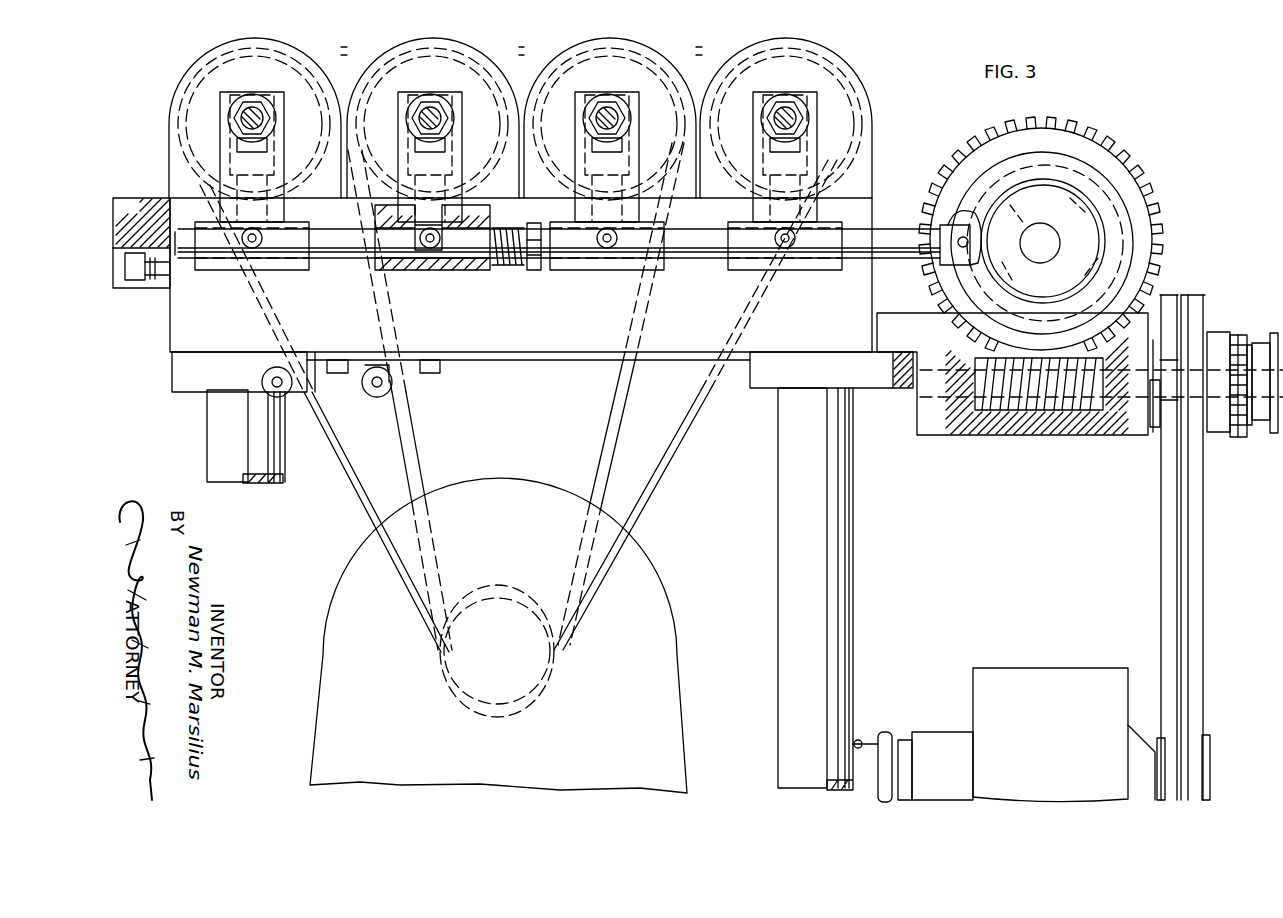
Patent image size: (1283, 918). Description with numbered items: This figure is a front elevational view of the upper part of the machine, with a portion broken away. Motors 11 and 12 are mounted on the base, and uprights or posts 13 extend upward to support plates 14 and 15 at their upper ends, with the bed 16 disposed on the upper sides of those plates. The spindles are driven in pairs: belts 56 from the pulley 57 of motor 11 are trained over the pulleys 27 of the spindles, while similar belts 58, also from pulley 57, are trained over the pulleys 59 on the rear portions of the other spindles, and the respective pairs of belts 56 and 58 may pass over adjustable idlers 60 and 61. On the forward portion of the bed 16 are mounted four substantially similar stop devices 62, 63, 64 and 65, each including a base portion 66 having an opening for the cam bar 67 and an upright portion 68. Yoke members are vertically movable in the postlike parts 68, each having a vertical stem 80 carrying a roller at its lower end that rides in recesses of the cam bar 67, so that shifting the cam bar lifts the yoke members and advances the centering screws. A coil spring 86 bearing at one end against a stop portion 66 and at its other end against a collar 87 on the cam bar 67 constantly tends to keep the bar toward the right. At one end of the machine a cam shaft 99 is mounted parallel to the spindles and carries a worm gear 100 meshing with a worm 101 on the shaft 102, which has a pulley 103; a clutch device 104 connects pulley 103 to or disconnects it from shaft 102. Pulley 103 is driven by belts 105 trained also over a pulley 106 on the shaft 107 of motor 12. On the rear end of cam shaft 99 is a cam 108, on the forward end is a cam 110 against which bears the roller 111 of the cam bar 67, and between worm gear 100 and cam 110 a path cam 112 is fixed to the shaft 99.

The motor 11 is at (633, 577).
The motor 12 is at (1016, 683).
The uprights or posts 13 is at (222, 420).
The plate 14 is at (190, 372).
The plate 15 is at (778, 378).
The bed 16 is at (182, 300).
The pulley 27 is at (217, 84).
The belts 56 is at (355, 52).
The pulley 57 is at (505, 597).
The belts 58 is at (706, 52).
The pulleys 59 is at (470, 64).
The adjustable idler 60 is at (282, 398).
The adjustable idler 61 is at (383, 401).
The stop device 62 is at (210, 148).
The stop device 63 is at (389, 96).
The stop device 64 is at (568, 103).
The stop device 65 is at (749, 106).
The base portion 66 is at (213, 266).
The cam bar 67 is at (327, 242).
The upright portion 68 is at (276, 198).
The stem 80 is at (262, 206).
The coil spring 86 is at (506, 234).
The collar 87 is at (533, 270).
The cam shaft 99 is at (1030, 247).
The worm gear 100 is at (1143, 217).
The worm 101 is at (1021, 410).
The shaft 102 is at (1118, 380).
The pulley 103 is at (1207, 328).
The clutch device 104 is at (1272, 460).
The belts 105 is at (1198, 584).
The pulley 106 is at (1163, 737).
The shaft 107 is at (1155, 777).
The cam 108 is at (1095, 190).
The cam 110 is at (1043, 241).
The roller 111 is at (977, 216).
The path cam 112 is at (1075, 164).